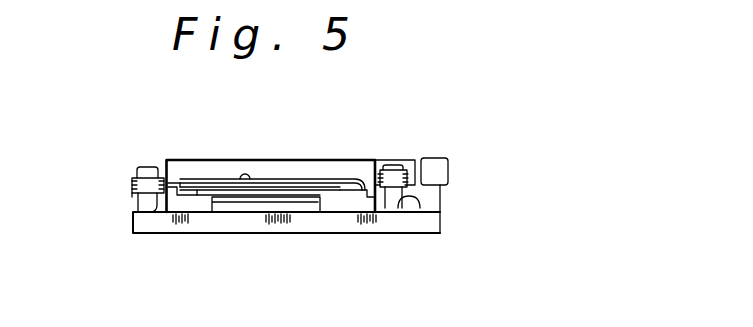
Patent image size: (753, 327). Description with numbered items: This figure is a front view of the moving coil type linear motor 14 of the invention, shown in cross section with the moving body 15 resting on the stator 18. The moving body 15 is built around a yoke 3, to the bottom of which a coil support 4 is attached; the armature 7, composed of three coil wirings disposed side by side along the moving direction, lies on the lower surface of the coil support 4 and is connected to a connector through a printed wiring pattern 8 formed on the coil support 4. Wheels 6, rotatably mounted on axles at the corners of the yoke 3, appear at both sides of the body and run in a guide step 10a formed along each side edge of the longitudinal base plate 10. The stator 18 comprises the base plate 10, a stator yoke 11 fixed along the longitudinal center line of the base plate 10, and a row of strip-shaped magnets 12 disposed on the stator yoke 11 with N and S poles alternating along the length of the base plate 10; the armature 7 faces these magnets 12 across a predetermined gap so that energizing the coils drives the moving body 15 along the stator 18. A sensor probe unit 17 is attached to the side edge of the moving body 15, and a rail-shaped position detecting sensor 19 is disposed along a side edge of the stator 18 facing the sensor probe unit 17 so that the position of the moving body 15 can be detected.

The yoke 3 is at (233, 158).
The coil support 4 is at (196, 166).
The wheels 6 is at (151, 165).
The armature 7 is at (322, 178).
The printed wiring pattern 8 is at (247, 213).
The base plate 10 is at (332, 234).
The guide step 10a is at (132, 198).
The stator yoke 11 is at (289, 226).
The magnets 12 is at (283, 178).
The moving coil type linear motor 14 is at (472, 123).
The moving body 15 is at (358, 158).
The sensor probe unit 17 is at (413, 158).
The stator 18 is at (210, 234).
The position detecting sensor 19 is at (437, 172).